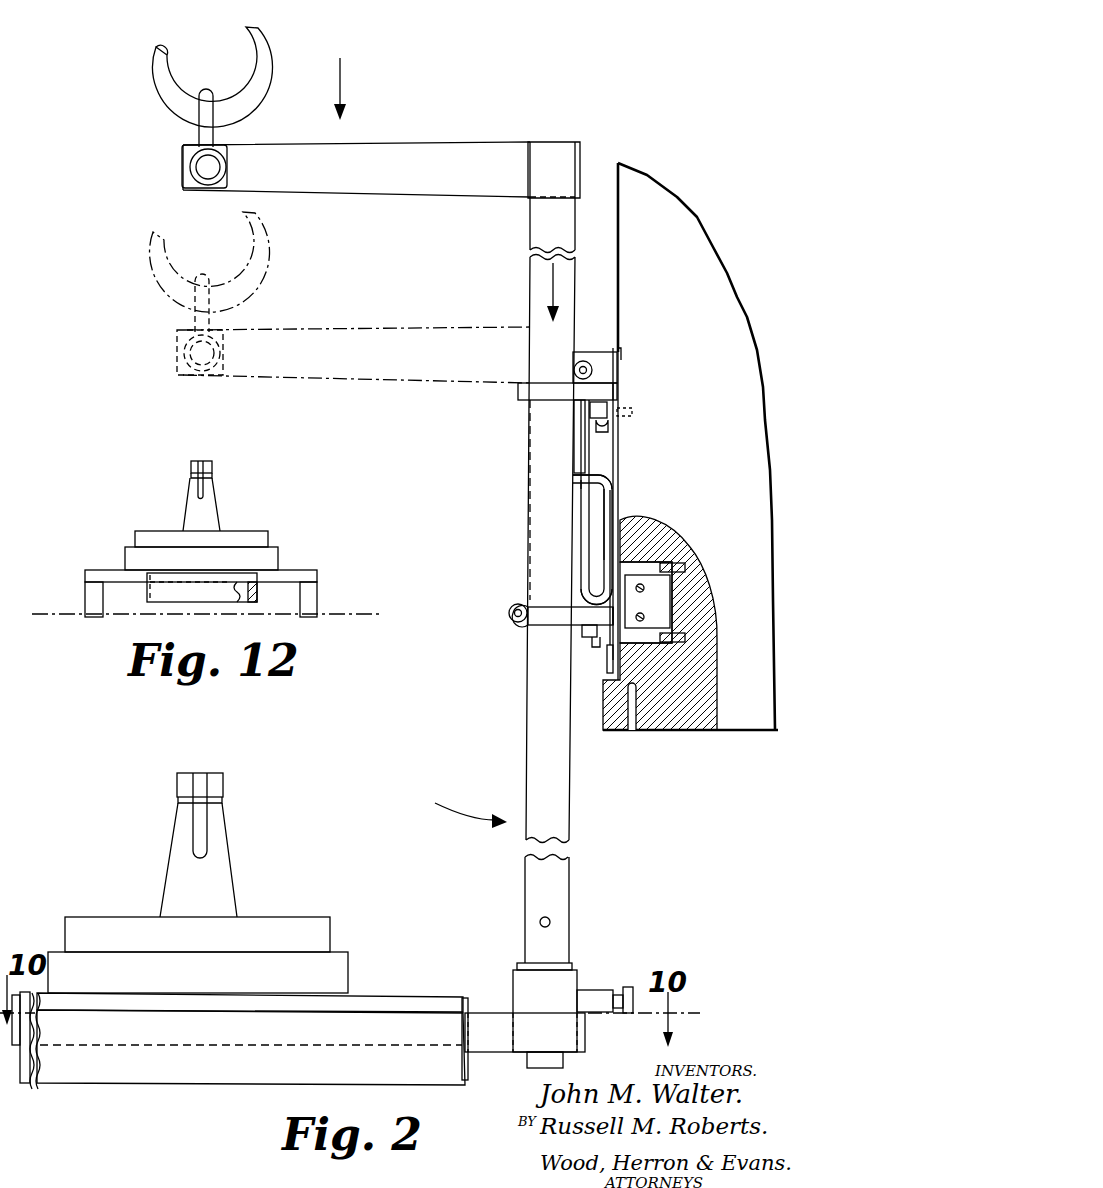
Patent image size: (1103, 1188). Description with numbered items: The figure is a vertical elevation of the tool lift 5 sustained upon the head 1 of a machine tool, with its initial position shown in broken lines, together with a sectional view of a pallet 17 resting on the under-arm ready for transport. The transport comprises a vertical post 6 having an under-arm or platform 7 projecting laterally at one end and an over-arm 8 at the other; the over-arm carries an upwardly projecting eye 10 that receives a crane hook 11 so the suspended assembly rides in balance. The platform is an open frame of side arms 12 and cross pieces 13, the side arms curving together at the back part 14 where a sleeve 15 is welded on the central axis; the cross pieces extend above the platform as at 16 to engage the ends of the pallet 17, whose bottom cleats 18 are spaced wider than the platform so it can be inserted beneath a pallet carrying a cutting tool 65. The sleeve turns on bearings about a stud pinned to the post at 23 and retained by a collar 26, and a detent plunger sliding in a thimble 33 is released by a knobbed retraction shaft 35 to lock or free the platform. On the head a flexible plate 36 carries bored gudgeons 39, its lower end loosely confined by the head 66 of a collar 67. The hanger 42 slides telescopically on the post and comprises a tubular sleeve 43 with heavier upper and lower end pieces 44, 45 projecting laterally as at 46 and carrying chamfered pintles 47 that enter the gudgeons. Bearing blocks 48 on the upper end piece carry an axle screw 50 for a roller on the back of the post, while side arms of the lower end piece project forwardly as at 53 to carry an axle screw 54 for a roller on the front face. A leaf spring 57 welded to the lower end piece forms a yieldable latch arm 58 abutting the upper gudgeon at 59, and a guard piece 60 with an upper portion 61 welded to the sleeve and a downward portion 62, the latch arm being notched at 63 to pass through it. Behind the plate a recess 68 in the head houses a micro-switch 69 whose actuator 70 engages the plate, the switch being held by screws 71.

In FIG. 2, the head 1 is at (680, 222).
In FIG. 2, the tool lift 5 is at (505, 940).
In FIG. 2, the vertical post 6 is at (590, 785).
In FIG. 2, the under-arm or platform member 7 is at (485, 1048).
In FIG. 12, the under-arm or platform member 7 is at (135, 600).
In FIG. 2, the over-arm 8 is at (415, 147).
In FIG. 2, the eye 10 is at (217, 137).
In FIG. 2, the crane hook 11 is at (272, 52).
In FIG. 2, the side arms 12 is at (492, 1045).
In FIG. 12, the side arms 12 is at (258, 600).
In FIG. 2, the cross pieces 13 is at (470, 1004).
In FIG. 12, the cross pieces 13 is at (178, 590).
In FIG. 2, the curved back part 14 is at (587, 1028).
In FIG. 2, the sleeve 15 is at (513, 978).
In FIG. 2, the raised portion of cross pieces 16 is at (464, 998).
In FIG. 12, the raised portion of cross pieces 16 is at (210, 580).
In FIG. 2, the pallet 17 is at (375, 998).
In FIG. 12, the pallet 17 is at (99, 572).
In FIG. 2, the cleats 18 is at (135, 1062).
In FIG. 12, the cleats 18 is at (88, 594).
In FIG. 2, the pin 23 is at (551, 921).
In FIG. 2, the collar 26 is at (565, 1062).
In FIG. 2, the thimble 33 is at (590, 990).
In FIG. 2, the knobbed retraction shaft 35 is at (624, 985).
In FIG. 2, the plate 36 is at (620, 462).
In FIG. 2, the gudgeons 39 is at (610, 410).
In FIG. 2, the hanger 42 is at (512, 494).
In FIG. 2, the tubular sleeve 43 is at (535, 550).
In FIG. 2, the upper end piece 44 is at (518, 392).
In FIG. 2, the lower end piece 45 is at (530, 625).
In FIG. 2, the lateral projection of end pieces 46 is at (612, 392).
In FIG. 2, the pintles 47 is at (608, 427).
In FIG. 2, the bearing blocks 48 is at (603, 362).
In FIG. 2, the axle screw 50 is at (573, 368).
In FIG. 2, the forward projection of side arms 53 is at (527, 606).
In FIG. 2, the axle screw 54 is at (509, 616).
In FIG. 2, the leaf spring 57 is at (625, 495).
In FIG. 2, the latch arm 58 is at (583, 522).
In FIG. 2, the abutting engagement 59 is at (583, 428).
In FIG. 2, the guard piece 60 is at (600, 562).
In FIG. 2, the upper portion 61 is at (615, 478).
In FIG. 2, the downward portion 62 is at (612, 522).
In FIG. 2, the notch 63 is at (585, 481).
In FIG. 2, the cutting tool 65 is at (304, 919).
In FIG. 12, the cutting tool 65 is at (250, 537).
In FIG. 2, the head 66 is at (606, 660).
In FIG. 2, the collar 67 is at (634, 732).
In FIG. 2, the recess 68 is at (652, 565).
In FIG. 2, the micro-switch 69 is at (665, 605).
In FIG. 2, the actuator 70 is at (642, 590).
In FIG. 2, the screws 71 is at (690, 565).